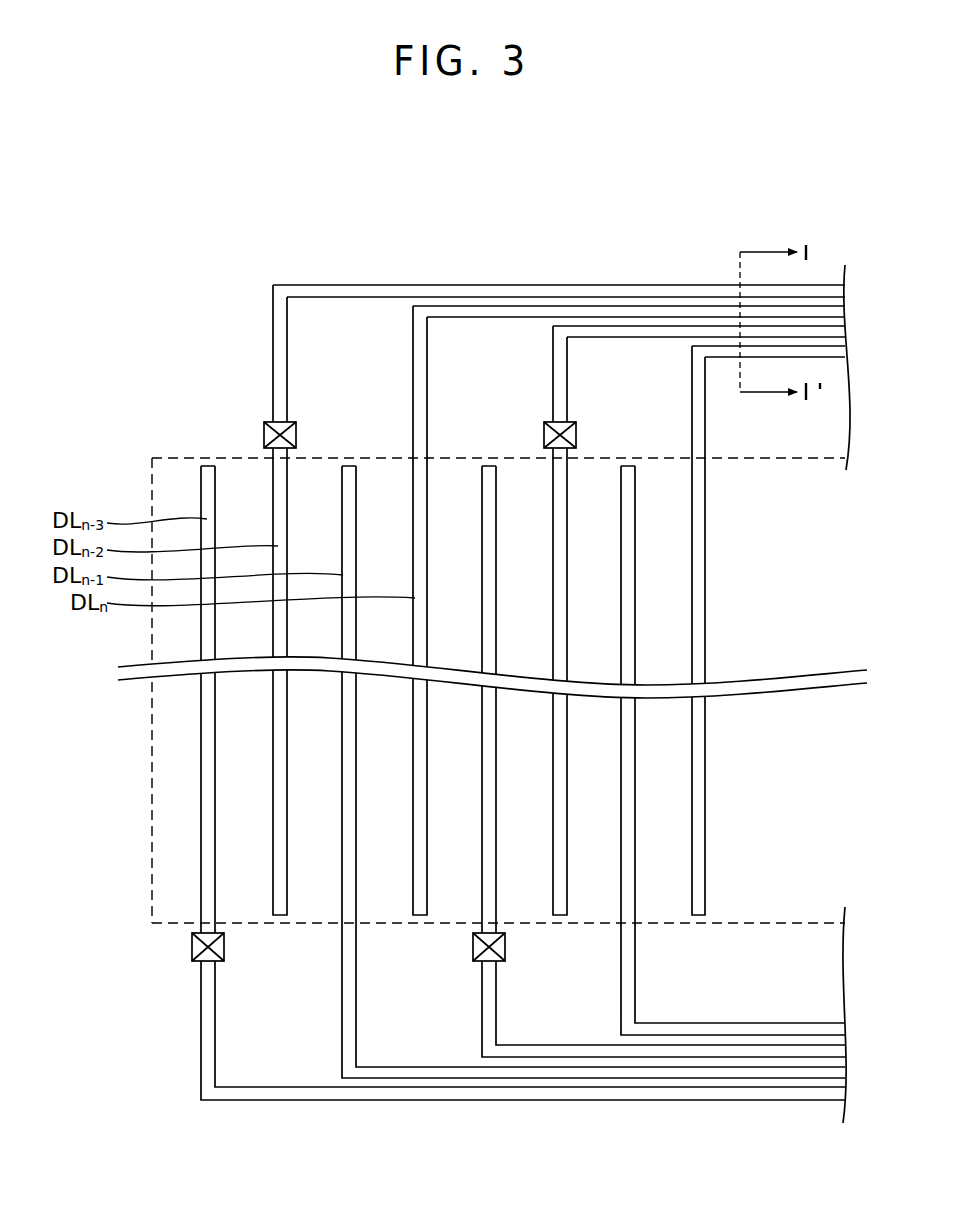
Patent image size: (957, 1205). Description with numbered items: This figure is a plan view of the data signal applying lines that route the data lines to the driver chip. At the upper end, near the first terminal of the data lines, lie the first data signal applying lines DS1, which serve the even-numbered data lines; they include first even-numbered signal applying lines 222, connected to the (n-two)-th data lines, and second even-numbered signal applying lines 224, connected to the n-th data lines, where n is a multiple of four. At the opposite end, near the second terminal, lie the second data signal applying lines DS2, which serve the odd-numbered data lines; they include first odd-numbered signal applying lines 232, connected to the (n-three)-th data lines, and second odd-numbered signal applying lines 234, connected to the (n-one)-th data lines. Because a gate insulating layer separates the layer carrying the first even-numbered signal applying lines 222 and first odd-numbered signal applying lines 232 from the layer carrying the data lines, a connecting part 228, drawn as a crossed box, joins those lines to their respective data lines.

The first even-numbered signal applying lines 222 is at (443, 290).
The second even-numbered signal applying lines 224 is at (553, 310).
The connecting part 228 is at (252, 435).
The first odd-numbered signal applying lines 232 is at (437, 1097).
The second odd-numbered signal applying lines 234 is at (551, 1072).
The first data signal applying lines DS1 is at (697, 270).
The second data signal applying lines DS2 is at (694, 1108).